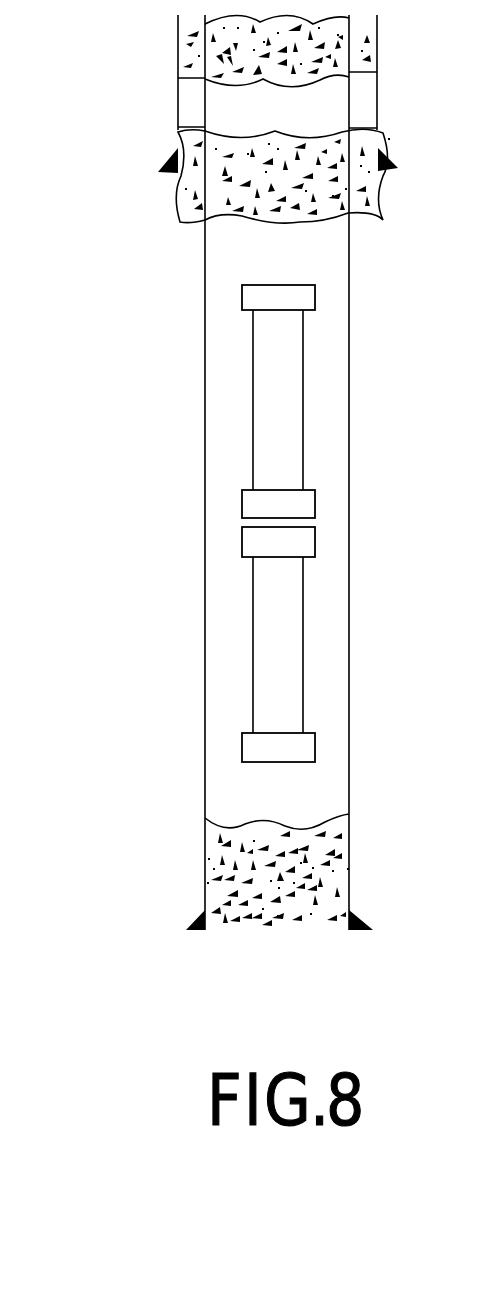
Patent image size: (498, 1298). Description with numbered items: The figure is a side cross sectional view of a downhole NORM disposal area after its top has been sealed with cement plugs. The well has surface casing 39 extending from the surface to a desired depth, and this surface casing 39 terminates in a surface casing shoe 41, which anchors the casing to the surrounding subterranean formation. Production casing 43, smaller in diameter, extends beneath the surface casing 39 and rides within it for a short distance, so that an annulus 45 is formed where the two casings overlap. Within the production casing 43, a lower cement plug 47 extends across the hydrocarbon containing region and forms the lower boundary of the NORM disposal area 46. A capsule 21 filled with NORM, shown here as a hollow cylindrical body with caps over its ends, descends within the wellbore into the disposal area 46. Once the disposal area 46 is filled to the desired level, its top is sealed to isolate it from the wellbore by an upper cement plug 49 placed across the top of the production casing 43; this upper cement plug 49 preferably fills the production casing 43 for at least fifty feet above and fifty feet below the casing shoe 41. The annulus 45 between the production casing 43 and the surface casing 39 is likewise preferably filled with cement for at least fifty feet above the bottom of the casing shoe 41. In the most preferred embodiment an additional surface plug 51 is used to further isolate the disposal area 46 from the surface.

The capsule 21 is at (283, 418).
The surface casing 39 is at (178, 103).
The surface casing shoe 41 is at (165, 170).
The production casing 43 is at (205, 465).
The annulus 45 is at (363, 110).
The NORM disposal area 46 is at (220, 392).
The lower cement plug 47 is at (232, 878).
The upper cement plug 49 is at (230, 187).
The surface plug 51 is at (235, 44).